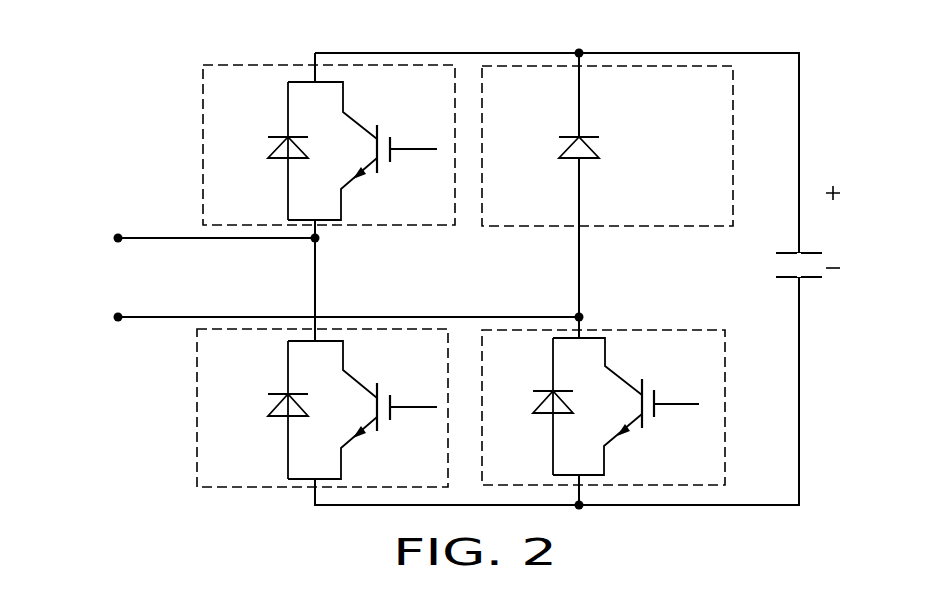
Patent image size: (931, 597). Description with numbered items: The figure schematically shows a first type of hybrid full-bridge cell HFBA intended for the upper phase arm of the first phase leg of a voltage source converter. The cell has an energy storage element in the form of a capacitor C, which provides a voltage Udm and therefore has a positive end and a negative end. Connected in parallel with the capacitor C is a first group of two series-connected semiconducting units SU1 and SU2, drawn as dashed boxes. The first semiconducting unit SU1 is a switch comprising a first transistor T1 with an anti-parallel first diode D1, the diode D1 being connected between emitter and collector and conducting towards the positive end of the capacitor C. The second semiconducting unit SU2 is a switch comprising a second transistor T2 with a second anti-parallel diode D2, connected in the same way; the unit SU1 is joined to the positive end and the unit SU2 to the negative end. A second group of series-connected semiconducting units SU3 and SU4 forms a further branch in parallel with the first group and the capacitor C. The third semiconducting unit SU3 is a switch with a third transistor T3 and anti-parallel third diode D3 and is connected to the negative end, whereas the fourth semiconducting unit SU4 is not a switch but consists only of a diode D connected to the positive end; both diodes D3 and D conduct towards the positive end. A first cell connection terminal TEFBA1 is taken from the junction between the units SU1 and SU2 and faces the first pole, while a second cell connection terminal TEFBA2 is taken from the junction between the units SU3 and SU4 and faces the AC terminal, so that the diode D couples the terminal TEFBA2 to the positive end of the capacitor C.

The hybrid full-bridge cell HFBA is at (166, 92).
The first cell connection terminal TEFBA1 is at (166, 217).
The second cell connection terminal TEFBA2 is at (302, 301).
The first semiconducting unit SU1 is at (410, 225).
The second semiconducting unit SU2 is at (252, 485).
The third semiconducting unit SU3 is at (637, 327).
The fourth semiconducting unit SU4 is at (560, 220).
The first anti-parallel diode D1 is at (268, 151).
The second anti-parallel diode D2 is at (265, 410).
The third anti-parallel diode D3 is at (531, 406).
The diode D is at (568, 130).
The first transistor T1 is at (362, 151).
The second transistor T2 is at (362, 410).
The third transistor T3 is at (626, 406).
The capacitor C is at (782, 268).
The voltage Udm is at (855, 227).